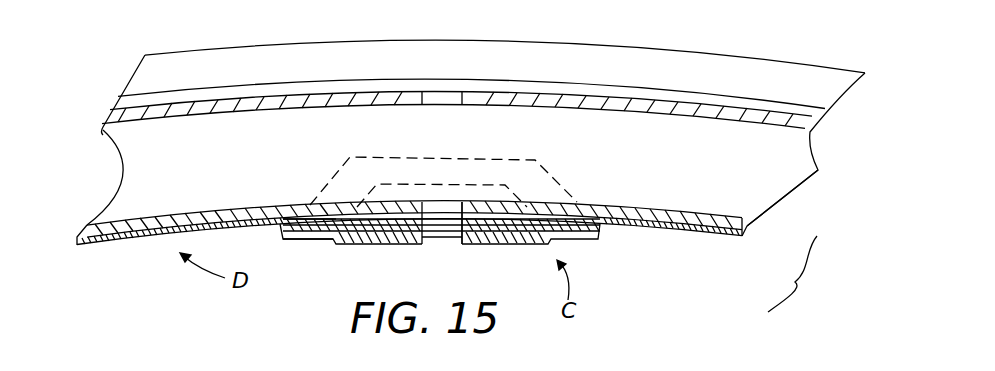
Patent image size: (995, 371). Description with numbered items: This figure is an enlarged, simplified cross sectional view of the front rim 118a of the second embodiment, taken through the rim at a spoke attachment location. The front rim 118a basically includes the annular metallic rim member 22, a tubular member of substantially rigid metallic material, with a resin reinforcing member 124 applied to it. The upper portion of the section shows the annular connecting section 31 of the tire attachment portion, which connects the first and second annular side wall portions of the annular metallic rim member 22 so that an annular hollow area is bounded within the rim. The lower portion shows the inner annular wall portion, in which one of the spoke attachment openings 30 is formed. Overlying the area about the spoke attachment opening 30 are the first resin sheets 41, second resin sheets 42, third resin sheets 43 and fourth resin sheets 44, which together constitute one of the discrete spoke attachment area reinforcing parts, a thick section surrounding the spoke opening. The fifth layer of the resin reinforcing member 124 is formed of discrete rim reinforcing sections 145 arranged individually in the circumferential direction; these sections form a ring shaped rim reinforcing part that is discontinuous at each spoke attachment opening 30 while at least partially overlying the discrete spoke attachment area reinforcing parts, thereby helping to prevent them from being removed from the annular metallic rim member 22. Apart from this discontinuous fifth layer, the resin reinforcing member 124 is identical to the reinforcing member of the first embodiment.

The annular connecting section 31 is at (708, 106).
The spoke attachment opening 30 is at (427, 212).
The first resin sheet 41 is at (407, 222).
The second resin sheet 42 is at (478, 222).
The third resin sheet 43 is at (528, 236).
The fourth resin sheet 44 is at (313, 228).
The discrete rim reinforcing section 145 is at (205, 228).
The annular metallic rim member 22 is at (771, 220).
The resin reinforcing member 124 is at (673, 254).
The front rim 118a is at (813, 274).